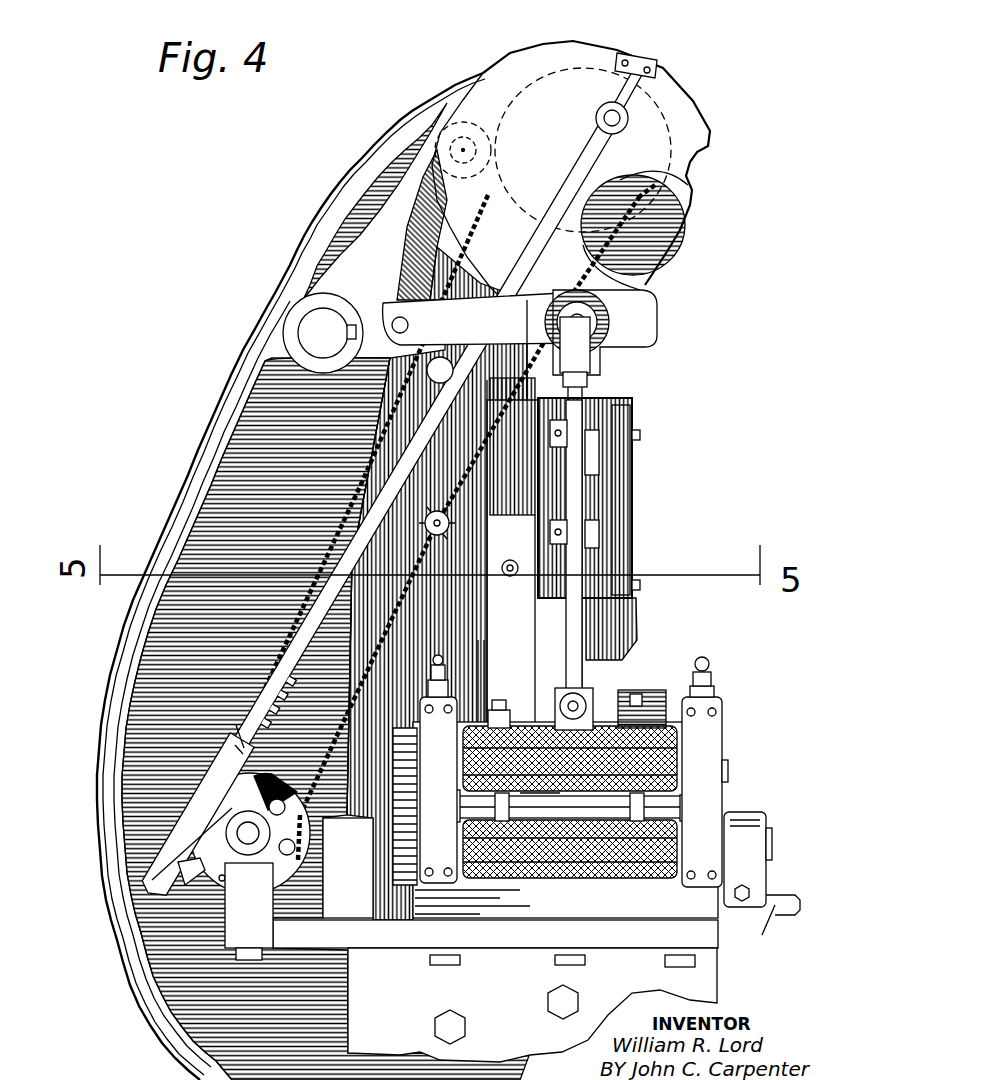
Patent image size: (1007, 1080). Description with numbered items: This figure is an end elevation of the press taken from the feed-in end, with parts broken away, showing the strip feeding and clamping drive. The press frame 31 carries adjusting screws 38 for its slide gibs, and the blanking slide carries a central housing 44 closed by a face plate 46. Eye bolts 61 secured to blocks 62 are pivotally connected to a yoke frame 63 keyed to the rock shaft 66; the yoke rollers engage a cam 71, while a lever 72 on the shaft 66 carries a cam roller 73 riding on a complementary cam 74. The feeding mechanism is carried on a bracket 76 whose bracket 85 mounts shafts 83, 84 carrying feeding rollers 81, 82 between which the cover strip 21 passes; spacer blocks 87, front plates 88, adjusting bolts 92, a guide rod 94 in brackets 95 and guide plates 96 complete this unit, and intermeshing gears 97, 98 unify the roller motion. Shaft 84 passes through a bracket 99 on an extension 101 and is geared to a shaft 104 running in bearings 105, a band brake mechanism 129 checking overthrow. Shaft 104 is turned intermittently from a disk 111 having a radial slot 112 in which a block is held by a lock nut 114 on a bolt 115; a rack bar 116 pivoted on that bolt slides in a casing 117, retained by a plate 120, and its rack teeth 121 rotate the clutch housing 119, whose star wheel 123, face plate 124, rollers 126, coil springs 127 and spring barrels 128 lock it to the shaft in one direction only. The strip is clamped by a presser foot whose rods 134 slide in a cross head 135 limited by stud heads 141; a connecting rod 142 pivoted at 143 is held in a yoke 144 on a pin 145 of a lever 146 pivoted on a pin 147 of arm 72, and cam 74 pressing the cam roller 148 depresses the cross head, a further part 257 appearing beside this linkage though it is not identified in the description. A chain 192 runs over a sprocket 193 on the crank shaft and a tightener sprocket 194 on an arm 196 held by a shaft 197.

The disk 111 is at (582, 48).
The radial slot 112 is at (652, 78).
The lock nut 114 is at (604, 112).
The bolt 115 is at (630, 122).
The rack bar 116 is at (540, 246).
The sprocket 193 is at (608, 230).
The cam 74 is at (690, 190).
The cam 71 is at (672, 242).
The lever 72 is at (352, 238).
The cam roller 73 is at (440, 128).
The pin 147 is at (396, 318).
The shaft 197 is at (438, 362).
The lever 146 is at (484, 318).
The cam roller 148 is at (610, 310).
The pin 145 is at (588, 320).
The yoke frame 63 is at (642, 333).
The yoke 144 is at (592, 358).
The rock shaft 66 is at (323, 333).
The eye bolt 61 is at (600, 415).
The connecting rod 142 is at (610, 460).
The block 62 is at (630, 476).
The face plate 46 is at (622, 528).
The central housing 44 is at (600, 558).
The chain 192 is at (340, 495).
The arm 196 is at (470, 505).
The chain tightener sprocket 194 is at (452, 522).
The adjusting screw 38 is at (522, 550).
The press frame 31 is at (480, 632).
The head 141 is at (480, 705).
The cross head 135 is at (498, 712).
The bracket 257 is at (630, 628).
The pivotal connection 143 is at (590, 698).
The rod 134 is at (636, 690).
The adjusting bolt 92 is at (710, 666).
The spacer block 87 is at (716, 700).
The front plate 88 is at (716, 734).
The shaft 83 is at (730, 768).
The bracket 95 is at (444, 792).
The shaft 84 is at (772, 843).
The band brake mechanism 129 is at (745, 859).
The rod 94 is at (530, 796).
The feeding roller 81 is at (570, 758).
The guide plate 96 is at (636, 794).
The cover strip 21 is at (552, 810).
The feeding roller 82 is at (570, 849).
The bracket 85 is at (565, 820).
The gear 97 is at (438, 769).
The plate 120 is at (246, 716).
The star wheel 123 is at (253, 783).
The shaft 104 is at (232, 829).
The rack teeth 121 is at (296, 672).
The casing 117 is at (231, 762).
The face plate 124 is at (233, 835).
The roller 126 is at (272, 862).
The bearing 105 is at (249, 911).
The coil spring 127 is at (290, 810).
The bracket 99 is at (348, 868).
The spring barrel 128 is at (296, 850).
The gear 98 is at (393, 870).
The clutch housing 119 is at (300, 870).
The extension 101 is at (495, 934).
The bracket 76 is at (532, 1005).